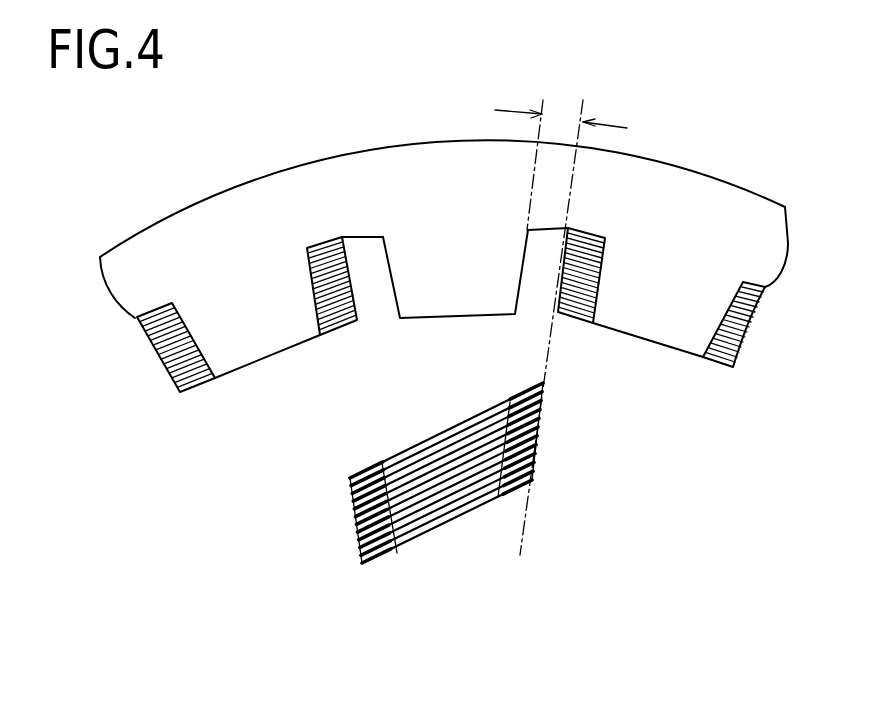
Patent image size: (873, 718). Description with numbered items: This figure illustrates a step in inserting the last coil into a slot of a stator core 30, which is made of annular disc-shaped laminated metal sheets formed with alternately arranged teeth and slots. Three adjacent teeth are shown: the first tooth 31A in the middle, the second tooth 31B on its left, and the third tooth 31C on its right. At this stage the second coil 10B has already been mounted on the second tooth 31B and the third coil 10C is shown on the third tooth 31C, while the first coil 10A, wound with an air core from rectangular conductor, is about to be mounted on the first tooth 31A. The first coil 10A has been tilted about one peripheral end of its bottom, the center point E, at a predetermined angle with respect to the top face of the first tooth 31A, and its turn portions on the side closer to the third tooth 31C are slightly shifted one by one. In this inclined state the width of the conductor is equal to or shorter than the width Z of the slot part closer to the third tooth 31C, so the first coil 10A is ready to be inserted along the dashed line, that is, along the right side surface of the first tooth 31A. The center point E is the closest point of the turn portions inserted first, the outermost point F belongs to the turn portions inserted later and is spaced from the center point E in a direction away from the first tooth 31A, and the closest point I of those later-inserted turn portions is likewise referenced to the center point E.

The stator core 30 is at (697, 183).
The first tooth 31A is at (488, 296).
The second tooth 31B is at (284, 336).
The third tooth 31C is at (691, 322).
The first coil 10A is at (347, 523).
The second coil 10B is at (167, 388).
The third coil 10C is at (577, 328).
The width of the slot part Z is at (561, 320).
The center point E is at (543, 381).
The outermost point F is at (350, 478).
The closest point I is at (383, 465).